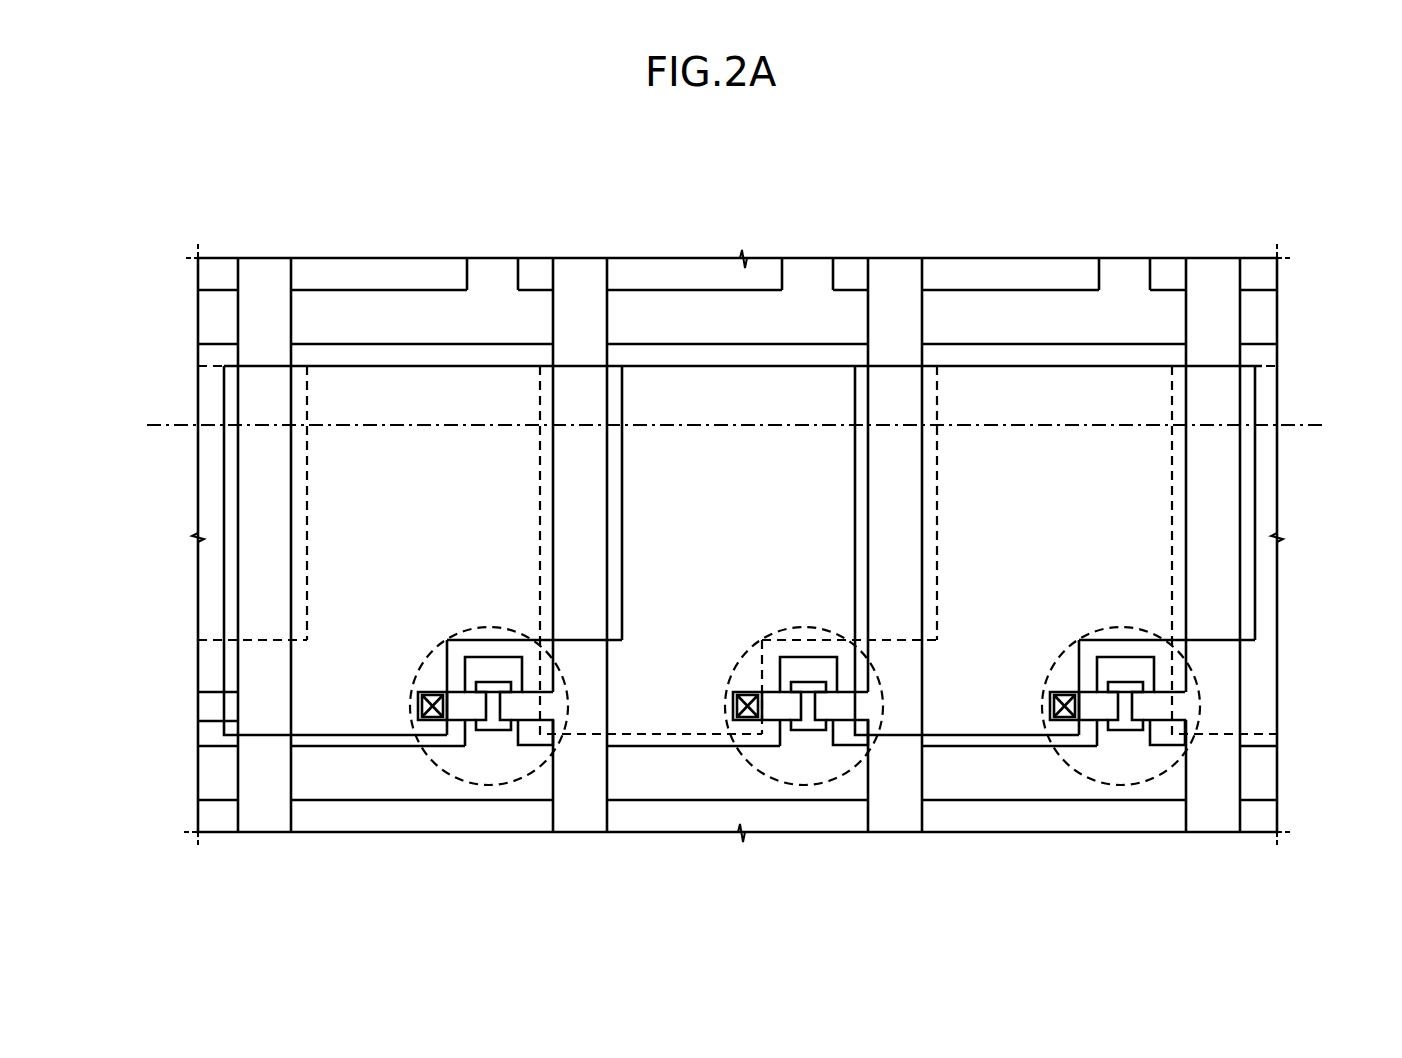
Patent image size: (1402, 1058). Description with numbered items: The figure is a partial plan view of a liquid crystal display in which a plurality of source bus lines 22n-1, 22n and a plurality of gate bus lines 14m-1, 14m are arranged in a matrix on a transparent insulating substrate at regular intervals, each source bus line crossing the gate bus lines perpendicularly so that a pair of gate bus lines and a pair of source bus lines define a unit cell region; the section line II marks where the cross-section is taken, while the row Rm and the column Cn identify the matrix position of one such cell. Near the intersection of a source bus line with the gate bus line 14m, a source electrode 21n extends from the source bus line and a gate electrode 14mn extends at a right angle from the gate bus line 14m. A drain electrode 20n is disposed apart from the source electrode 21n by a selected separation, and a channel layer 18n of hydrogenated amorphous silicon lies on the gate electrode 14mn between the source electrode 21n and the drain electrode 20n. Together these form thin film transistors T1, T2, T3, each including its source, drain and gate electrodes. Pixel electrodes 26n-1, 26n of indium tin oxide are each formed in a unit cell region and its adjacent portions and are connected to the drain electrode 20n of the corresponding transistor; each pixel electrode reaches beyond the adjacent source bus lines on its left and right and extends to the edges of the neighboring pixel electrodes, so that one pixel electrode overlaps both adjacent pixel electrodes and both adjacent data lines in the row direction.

The gate line 14m-1 is at (206, 315).
The gate bus line 14m is at (207, 779).
The source bus line 22n-1 is at (262, 813).
The source bus line 22n is at (578, 813).
The pixel electrode 26n-1 is at (205, 581).
The pixel electrode 26n is at (458, 481).
The gate electrode 14mn is at (483, 672).
The drain electrode 20n is at (458, 700).
The source electrode 21n is at (527, 700).
The channel layer 18n is at (495, 725).
The thin film transistor T1 is at (443, 770).
The thin film transistor T2 is at (755, 765).
The thin film transistor T3 is at (1072, 765).
The column Cn is at (398, 228).
The row Rm is at (165, 463).
The section line II is at (1333, 330).